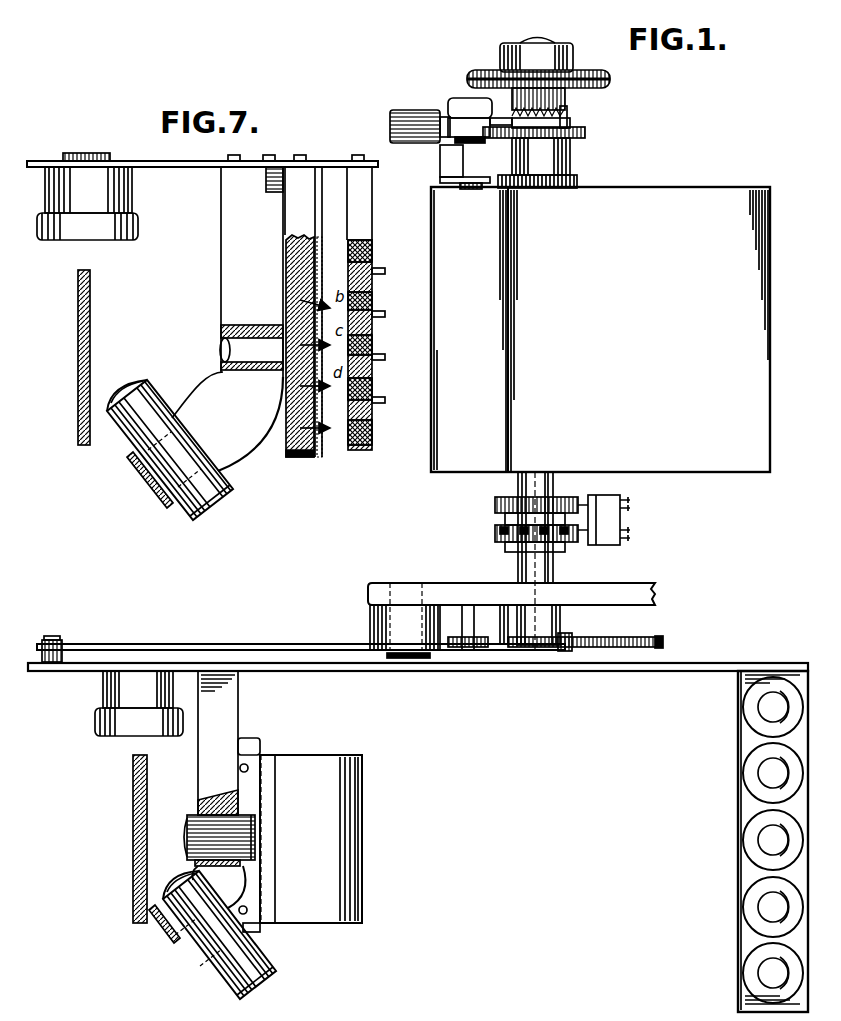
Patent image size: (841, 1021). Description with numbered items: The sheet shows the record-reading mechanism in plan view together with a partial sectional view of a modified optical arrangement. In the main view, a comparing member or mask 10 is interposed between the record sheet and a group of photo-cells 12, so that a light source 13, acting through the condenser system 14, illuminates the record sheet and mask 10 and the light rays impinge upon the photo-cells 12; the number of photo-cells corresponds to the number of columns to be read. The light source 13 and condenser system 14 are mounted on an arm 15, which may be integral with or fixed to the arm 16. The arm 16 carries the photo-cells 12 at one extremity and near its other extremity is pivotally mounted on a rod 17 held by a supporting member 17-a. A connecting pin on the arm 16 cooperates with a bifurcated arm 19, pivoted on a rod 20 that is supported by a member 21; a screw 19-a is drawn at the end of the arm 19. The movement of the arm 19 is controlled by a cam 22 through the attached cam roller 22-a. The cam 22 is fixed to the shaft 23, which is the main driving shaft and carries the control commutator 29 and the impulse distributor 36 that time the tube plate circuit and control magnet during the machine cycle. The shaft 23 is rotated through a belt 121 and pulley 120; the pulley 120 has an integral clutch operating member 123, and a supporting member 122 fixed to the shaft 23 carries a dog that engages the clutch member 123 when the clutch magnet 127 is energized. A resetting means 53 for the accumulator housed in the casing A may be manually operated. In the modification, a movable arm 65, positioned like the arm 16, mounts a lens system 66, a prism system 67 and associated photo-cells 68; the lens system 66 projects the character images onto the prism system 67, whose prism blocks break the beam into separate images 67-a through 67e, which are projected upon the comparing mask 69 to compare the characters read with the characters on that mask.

In FIG. 1, the comparing member or mask 10 is at (300, 772).
In FIG. 1, the photo-cells 12 is at (767, 760).
In FIG. 1, the light source 13 is at (245, 949).
In FIG. 1, the condenser system 14 is at (235, 831).
In FIG. 1, the arm 15 is at (230, 708).
In FIG. 1, the arm 16 is at (310, 667).
In FIG. 1, the rod 17 is at (108, 691).
In FIG. 1, the supporting member 17-a is at (176, 738).
In FIG. 1, the bifurcated arm 19 is at (287, 648).
In FIG. 1, the screw 19-a is at (68, 657).
In FIG. 1, the rod 20 is at (384, 629).
In FIG. 1, the supporting member 21 is at (385, 588).
In FIG. 1, the cam 22 is at (656, 641).
In FIG. 1, the cam roller 22-a is at (562, 652).
In FIG. 1, the shaft 23 is at (540, 567).
In FIG. 1, the control commutator 29 is at (495, 509).
In FIG. 1, the impulse distributor 36 is at (495, 538).
In FIG. 1, the resetting means 53 is at (463, 163).
In FIG. 7, the movable arm 65 is at (221, 257).
In FIG. 7, the lens system 66 is at (248, 328).
In FIG. 7, the prism system 67 is at (310, 260).
In FIG. 7, the separate beam or image 67-a is at (329, 271).
In FIG. 7, the separate beam or image 67e is at (340, 432).
In FIG. 7, the photo-cells 68 is at (372, 252).
In FIG. 7, the comparing mask 69 is at (313, 462).
In FIG. 1, the pulley 120 is at (492, 76).
In FIG. 1, the belt 121 is at (467, 80).
In FIG. 1, the supporting member 122 is at (585, 136).
In FIG. 1, the clutch operating member 123 is at (560, 126).
In FIG. 1, the clutch magnet 127 is at (417, 102).
In FIG. 1, the housing A is at (600, 329).